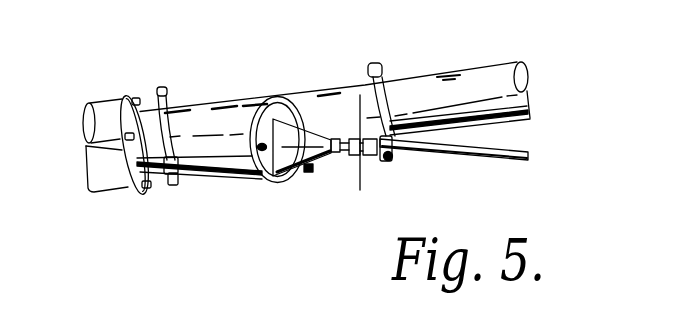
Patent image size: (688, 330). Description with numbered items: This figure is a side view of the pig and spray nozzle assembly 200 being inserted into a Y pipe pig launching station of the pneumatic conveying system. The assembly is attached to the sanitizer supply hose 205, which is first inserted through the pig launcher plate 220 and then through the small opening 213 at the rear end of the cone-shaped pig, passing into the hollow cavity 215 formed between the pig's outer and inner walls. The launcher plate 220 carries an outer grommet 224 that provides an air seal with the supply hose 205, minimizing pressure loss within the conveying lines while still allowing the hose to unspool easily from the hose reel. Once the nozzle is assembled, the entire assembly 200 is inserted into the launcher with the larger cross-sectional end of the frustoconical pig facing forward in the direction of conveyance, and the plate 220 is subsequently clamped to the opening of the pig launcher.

The pig and spray nozzle assembly 200 is at (288, 187).
The supply hose 205 is at (440, 153).
The opening 213 is at (316, 162).
The hollow cavity 215 is at (300, 129).
The pig launcher plate 220 is at (372, 130).
The outer grommet 224 is at (361, 160).